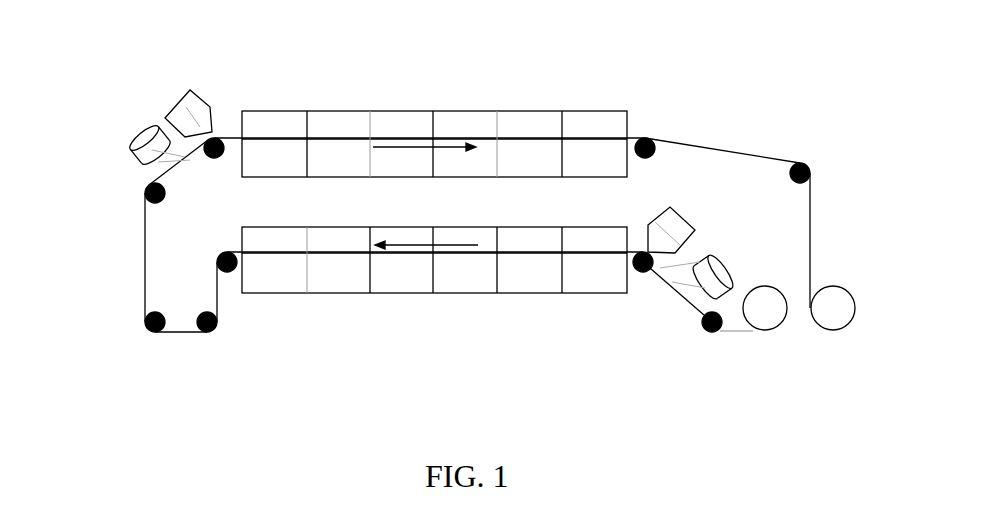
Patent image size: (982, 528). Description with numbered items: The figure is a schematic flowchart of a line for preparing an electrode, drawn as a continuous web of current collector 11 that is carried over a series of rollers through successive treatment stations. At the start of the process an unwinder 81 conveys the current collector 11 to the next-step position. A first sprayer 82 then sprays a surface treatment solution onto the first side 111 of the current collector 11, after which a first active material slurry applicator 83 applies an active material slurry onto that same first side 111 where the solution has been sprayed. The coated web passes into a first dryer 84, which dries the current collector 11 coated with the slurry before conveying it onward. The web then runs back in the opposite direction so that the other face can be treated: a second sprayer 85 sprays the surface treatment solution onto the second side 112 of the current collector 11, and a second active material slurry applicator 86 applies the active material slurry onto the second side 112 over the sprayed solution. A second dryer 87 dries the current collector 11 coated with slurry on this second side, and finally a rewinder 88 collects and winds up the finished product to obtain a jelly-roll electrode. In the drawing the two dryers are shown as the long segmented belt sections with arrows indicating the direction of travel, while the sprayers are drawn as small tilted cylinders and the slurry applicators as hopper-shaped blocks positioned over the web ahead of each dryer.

The current collector 11 is at (740, 332).
The unwinder 81 is at (767, 318).
The first sprayer 82 is at (730, 269).
The first active material slurry applicator 83 is at (662, 212).
The first dryer 84 is at (478, 228).
The second sprayer 85 is at (136, 140).
The second active material slurry applicator 86 is at (200, 100).
The second dryer 87 is at (477, 108).
The rewinder 88 is at (833, 297).
The first side 111 is at (708, 258).
The second side 112 is at (157, 177).